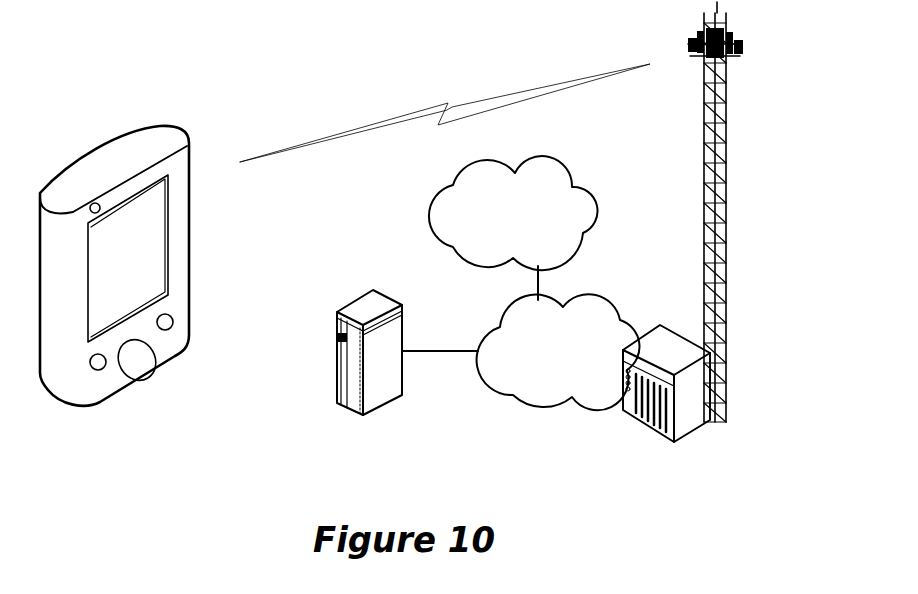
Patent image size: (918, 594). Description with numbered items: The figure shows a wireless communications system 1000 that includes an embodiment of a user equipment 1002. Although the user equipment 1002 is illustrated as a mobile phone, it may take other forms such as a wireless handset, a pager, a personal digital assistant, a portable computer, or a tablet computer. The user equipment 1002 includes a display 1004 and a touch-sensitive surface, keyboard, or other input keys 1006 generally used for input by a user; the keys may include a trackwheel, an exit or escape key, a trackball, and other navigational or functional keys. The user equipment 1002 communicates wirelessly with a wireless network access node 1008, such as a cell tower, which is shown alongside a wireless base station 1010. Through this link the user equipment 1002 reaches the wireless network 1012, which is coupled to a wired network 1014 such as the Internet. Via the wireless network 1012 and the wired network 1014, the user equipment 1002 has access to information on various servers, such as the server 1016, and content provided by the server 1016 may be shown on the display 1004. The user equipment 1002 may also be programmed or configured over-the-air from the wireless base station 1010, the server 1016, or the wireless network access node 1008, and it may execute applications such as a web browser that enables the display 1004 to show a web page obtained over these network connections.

The wireless communications system 1000 is at (238, 90).
The user equipment 1002 is at (113, 400).
The display 1004 is at (193, 186).
The input keys 1006 is at (193, 260).
The wireless network access node 1008 is at (727, 418).
The wireless base station 1010 is at (637, 424).
The wireless network 1012 is at (558, 352).
The wired network 1014 is at (513, 213).
The server 1016 is at (372, 412).